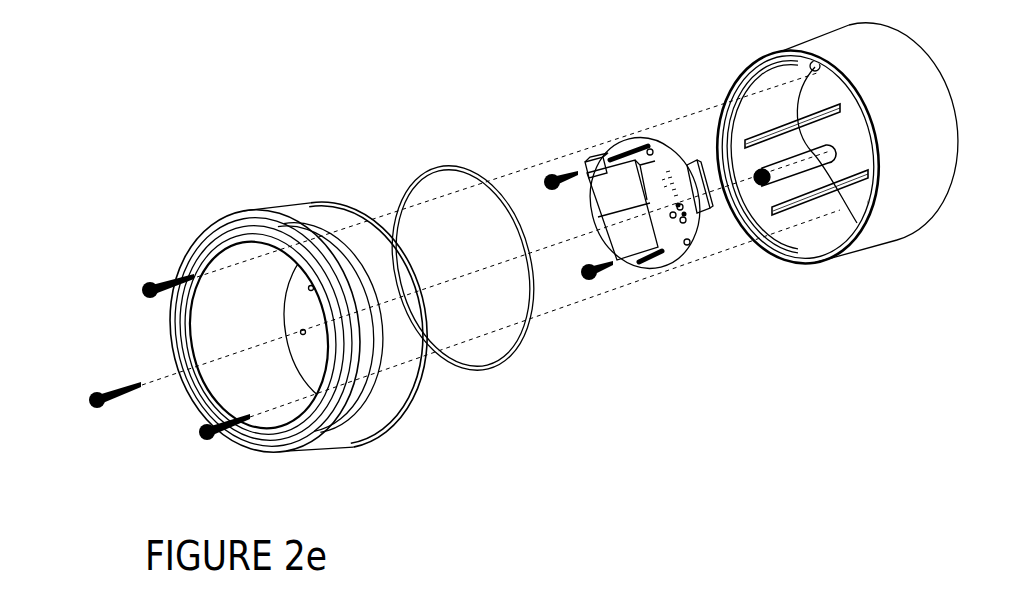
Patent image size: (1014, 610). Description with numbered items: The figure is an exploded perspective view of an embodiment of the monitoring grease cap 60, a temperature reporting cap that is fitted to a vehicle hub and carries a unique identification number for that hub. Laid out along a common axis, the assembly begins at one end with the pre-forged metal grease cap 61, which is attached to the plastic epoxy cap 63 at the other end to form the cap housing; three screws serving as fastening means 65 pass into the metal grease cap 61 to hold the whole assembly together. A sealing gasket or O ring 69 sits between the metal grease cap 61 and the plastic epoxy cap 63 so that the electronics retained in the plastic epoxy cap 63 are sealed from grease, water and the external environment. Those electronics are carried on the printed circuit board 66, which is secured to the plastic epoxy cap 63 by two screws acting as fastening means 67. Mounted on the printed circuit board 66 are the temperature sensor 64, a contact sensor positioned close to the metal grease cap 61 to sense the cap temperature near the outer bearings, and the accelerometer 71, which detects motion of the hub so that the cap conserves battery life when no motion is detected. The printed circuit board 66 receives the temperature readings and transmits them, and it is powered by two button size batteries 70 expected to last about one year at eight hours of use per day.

The monitoring grease cap 60 is at (237, 171).
The metal grease cap 61 is at (352, 442).
The plastic epoxy cap 63 is at (866, 257).
The temperature sensor 64 is at (589, 155).
The fastening means 65 is at (200, 413).
The printed circuit board 66 is at (672, 283).
The fastening means 67 is at (556, 197).
The O ring 69 is at (474, 380).
The button size batteries 70 is at (709, 215).
The accelerometer 71 is at (626, 243).